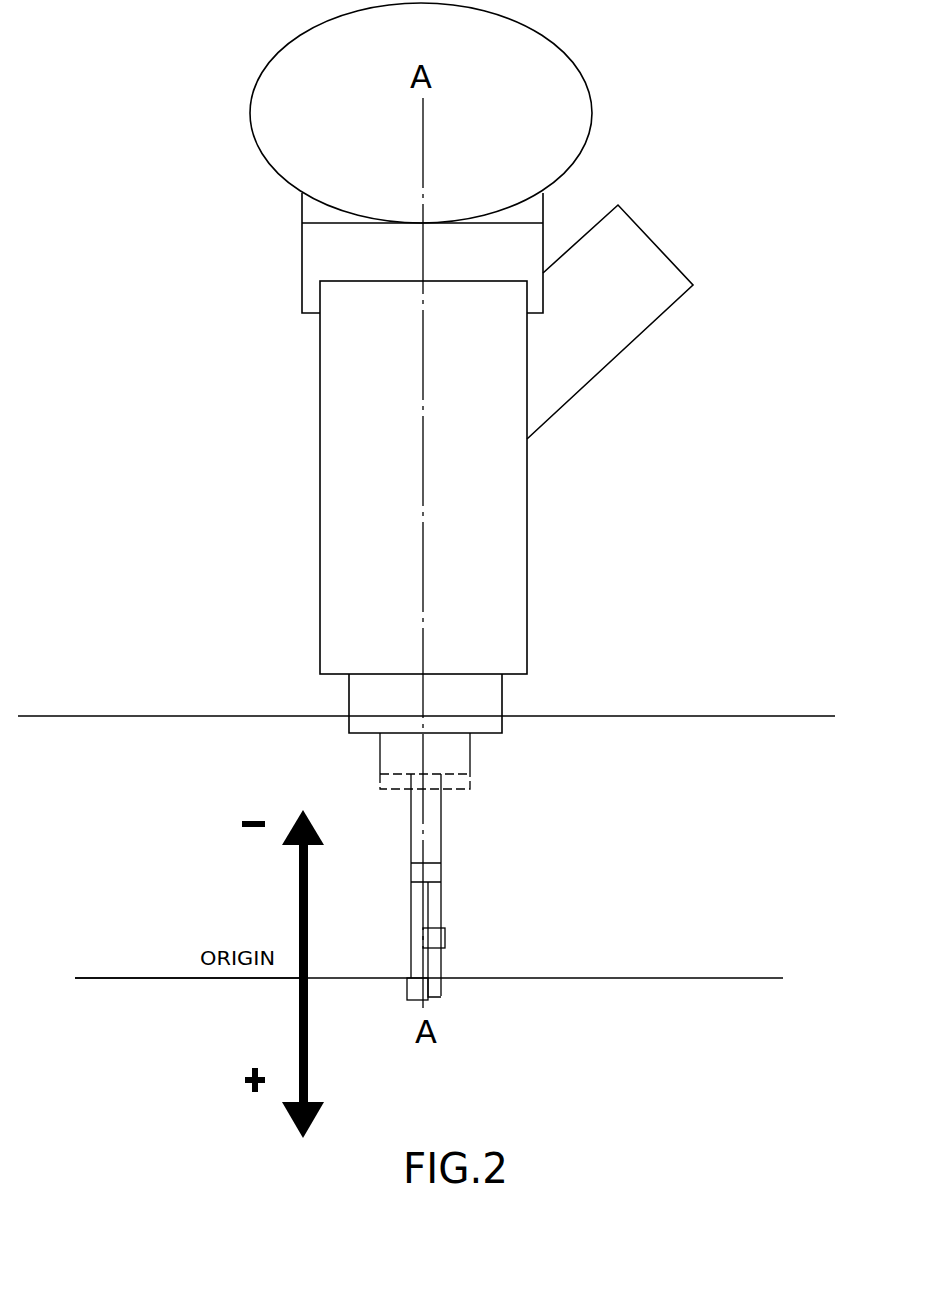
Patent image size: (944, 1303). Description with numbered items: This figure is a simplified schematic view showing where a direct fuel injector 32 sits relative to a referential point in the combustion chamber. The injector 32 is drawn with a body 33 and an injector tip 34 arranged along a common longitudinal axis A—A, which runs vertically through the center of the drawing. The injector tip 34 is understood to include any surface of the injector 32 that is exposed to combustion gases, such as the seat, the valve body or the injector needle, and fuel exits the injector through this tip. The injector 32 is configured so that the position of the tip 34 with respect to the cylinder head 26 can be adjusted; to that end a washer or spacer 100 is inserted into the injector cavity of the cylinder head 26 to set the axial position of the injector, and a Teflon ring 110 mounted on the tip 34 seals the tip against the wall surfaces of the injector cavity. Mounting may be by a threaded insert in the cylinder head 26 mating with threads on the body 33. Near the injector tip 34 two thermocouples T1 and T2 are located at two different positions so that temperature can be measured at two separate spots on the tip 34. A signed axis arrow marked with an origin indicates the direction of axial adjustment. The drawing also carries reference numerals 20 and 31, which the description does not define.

The injector 32 is at (136, 102).
The body 33 is at (320, 408).
The spacer 100 is at (470, 790).
The Teflon ring 110 is at (443, 868).
The injector tip 34 is at (437, 997).
The cylinder head 26 is at (728, 933).
The workpiece surface 31 is at (615, 997).
The workpiece 20 is at (151, 1015).
The thermocouple T1 is at (407, 978).
The thermocouple T2 is at (445, 933).